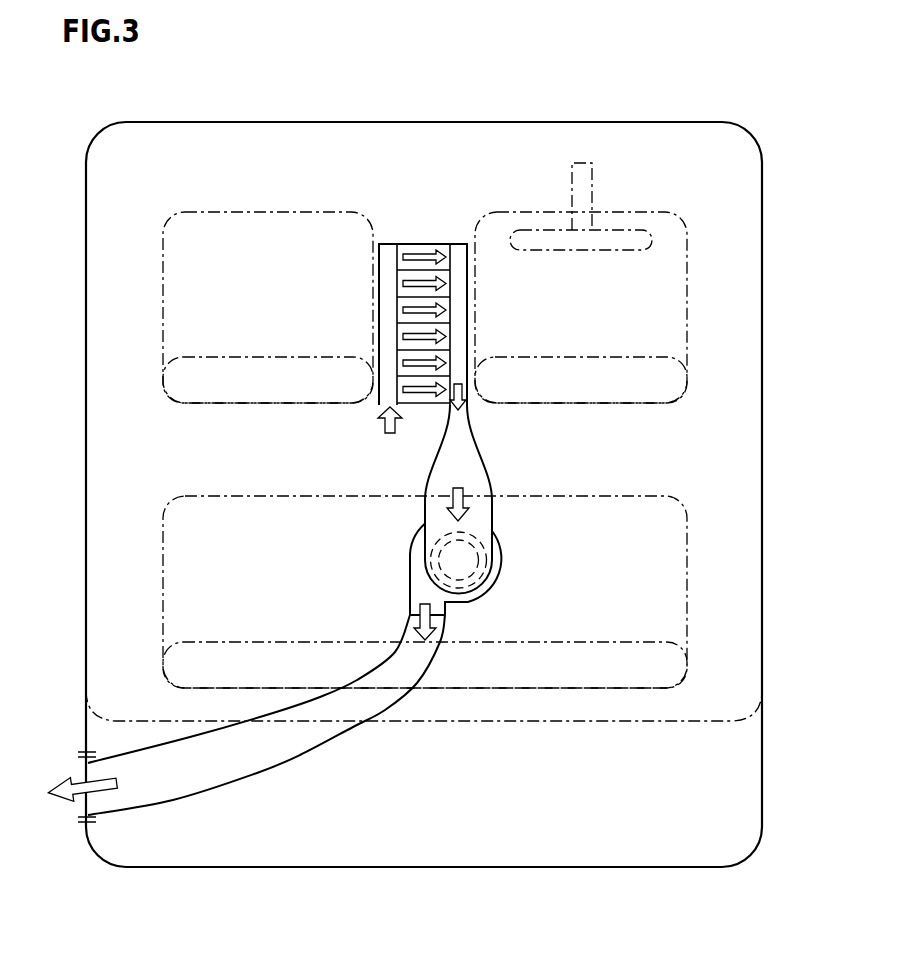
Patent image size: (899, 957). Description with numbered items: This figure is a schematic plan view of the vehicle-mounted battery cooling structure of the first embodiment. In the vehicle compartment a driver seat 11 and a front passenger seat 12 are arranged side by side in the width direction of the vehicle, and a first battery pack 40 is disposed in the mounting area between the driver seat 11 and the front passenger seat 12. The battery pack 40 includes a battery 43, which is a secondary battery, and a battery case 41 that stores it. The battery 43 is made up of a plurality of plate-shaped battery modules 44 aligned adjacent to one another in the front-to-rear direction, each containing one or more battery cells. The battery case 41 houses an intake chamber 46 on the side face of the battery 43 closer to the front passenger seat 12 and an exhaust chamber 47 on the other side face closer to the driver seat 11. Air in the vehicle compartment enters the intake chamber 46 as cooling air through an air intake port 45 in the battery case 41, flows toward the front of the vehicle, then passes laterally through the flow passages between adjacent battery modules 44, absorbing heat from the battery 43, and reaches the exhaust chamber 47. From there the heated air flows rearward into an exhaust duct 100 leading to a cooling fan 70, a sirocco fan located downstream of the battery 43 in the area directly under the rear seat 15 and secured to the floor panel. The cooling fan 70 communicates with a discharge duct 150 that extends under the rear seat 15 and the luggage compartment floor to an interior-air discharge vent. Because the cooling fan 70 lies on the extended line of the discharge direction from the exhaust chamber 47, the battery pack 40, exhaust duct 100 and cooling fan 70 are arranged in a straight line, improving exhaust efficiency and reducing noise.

The driver seat 11 is at (667, 268).
The front passenger seat 12 is at (190, 228).
The rear seat 15 is at (668, 611).
The first battery pack 40 is at (407, 260).
The battery case 41 is at (393, 243).
The battery 43 is at (38, 232).
The battery modules 44 is at (398, 256).
The air intake port 45 is at (383, 406).
The intake chamber 46 is at (380, 396).
The exhaust chamber 47 is at (462, 335).
The cooling fan 70 is at (495, 563).
The exhaust duct 100 is at (462, 457).
The discharge duct 150 is at (225, 768).